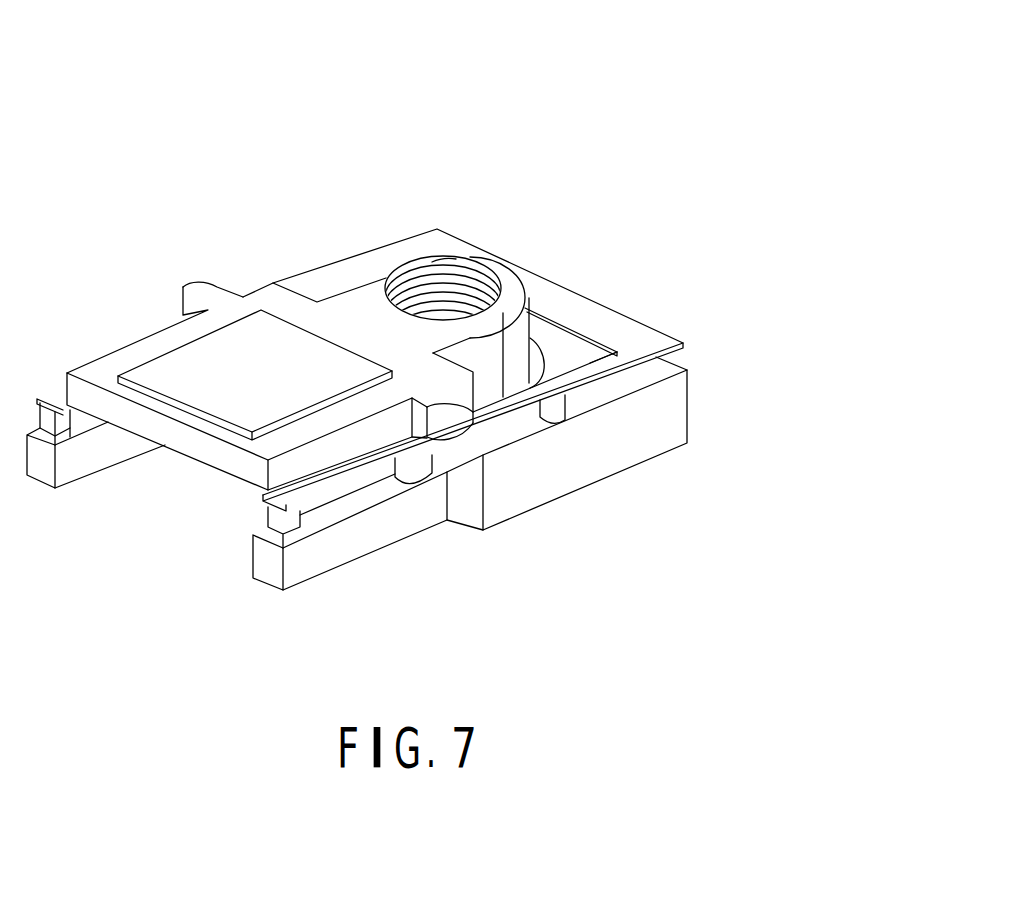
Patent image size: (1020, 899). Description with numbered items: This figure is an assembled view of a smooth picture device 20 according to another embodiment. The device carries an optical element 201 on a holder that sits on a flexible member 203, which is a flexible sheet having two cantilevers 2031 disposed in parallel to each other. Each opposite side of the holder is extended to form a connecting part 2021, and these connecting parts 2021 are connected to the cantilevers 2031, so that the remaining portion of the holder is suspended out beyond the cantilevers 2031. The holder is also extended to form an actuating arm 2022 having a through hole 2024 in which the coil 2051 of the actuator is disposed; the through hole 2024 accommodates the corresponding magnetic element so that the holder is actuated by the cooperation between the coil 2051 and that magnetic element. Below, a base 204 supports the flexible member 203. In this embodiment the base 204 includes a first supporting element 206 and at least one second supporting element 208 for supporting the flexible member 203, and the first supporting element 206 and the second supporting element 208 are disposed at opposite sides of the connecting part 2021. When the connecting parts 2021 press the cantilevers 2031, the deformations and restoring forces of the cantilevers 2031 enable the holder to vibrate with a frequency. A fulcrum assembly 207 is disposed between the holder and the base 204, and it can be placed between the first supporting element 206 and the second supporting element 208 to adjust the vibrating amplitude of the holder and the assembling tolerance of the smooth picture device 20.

The smooth picture device 20 is at (173, 55).
The optical element 201 is at (152, 365).
The connecting part 2021 is at (213, 292).
The actuating arm 2022 is at (502, 283).
The through hole 2024 is at (430, 303).
The coil 2051 is at (453, 278).
The flexible member 203 is at (615, 305).
The cantilever 2031 is at (512, 403).
The base 204 is at (688, 403).
The first supporting element 206 is at (580, 406).
The fulcrum assembly 207 is at (415, 475).
The second supporting element 208 is at (272, 527).